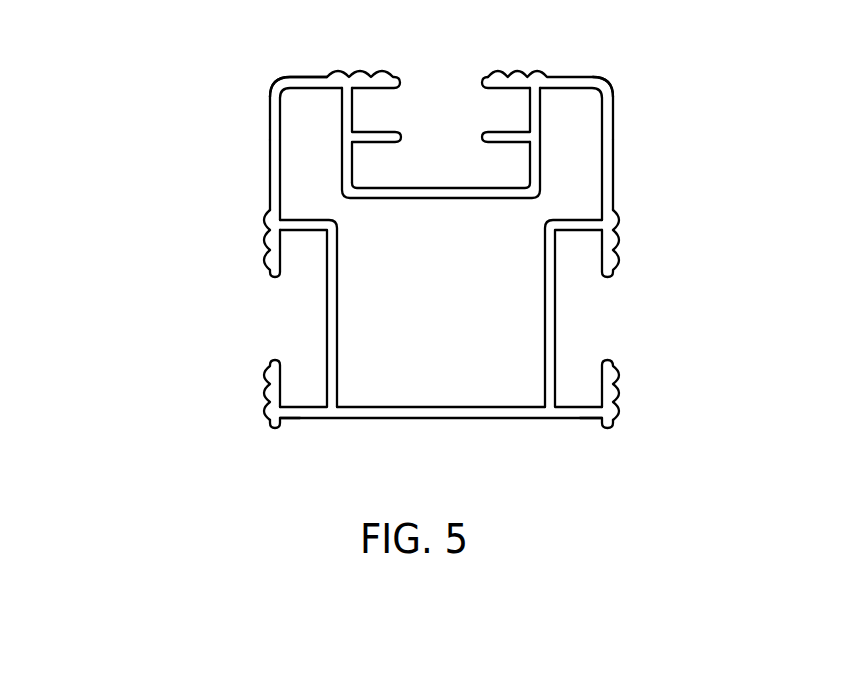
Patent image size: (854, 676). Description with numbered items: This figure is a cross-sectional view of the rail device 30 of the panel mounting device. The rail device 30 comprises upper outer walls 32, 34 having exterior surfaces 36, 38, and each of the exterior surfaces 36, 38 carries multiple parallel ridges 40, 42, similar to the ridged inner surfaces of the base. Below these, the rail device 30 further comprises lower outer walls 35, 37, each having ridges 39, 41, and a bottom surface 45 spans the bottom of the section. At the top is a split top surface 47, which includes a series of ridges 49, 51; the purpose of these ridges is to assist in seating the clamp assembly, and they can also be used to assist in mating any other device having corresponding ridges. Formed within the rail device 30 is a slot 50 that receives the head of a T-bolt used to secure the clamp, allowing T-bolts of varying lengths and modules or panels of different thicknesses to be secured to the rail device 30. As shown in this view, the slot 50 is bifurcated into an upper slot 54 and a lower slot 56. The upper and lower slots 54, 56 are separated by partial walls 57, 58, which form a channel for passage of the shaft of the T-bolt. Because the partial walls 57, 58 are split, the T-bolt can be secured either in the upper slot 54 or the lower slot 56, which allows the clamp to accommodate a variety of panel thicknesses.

The rail device 30 is at (140, 92).
The upper outer wall 32 is at (268, 160).
The upper outer wall 34 is at (614, 172).
The lower outer wall 35 is at (267, 405).
The exterior surface 36 is at (268, 123).
The lower outer wall 37 is at (618, 413).
The exterior surface 38 is at (614, 123).
The ridges 39 is at (266, 375).
The parallel ridges 40 is at (266, 243).
The ridges 41 is at (618, 375).
The parallel ridges 42 is at (618, 245).
The bottom surface 45 is at (442, 419).
The split top surface 47 is at (303, 70).
The ridges 49 is at (353, 72).
The slot 50 is at (442, 84).
The ridges 51 is at (518, 73).
The upper slot 54 is at (498, 105).
The lower slot 56 is at (375, 158).
The partial wall 57 is at (377, 132).
The partial wall 58 is at (507, 132).